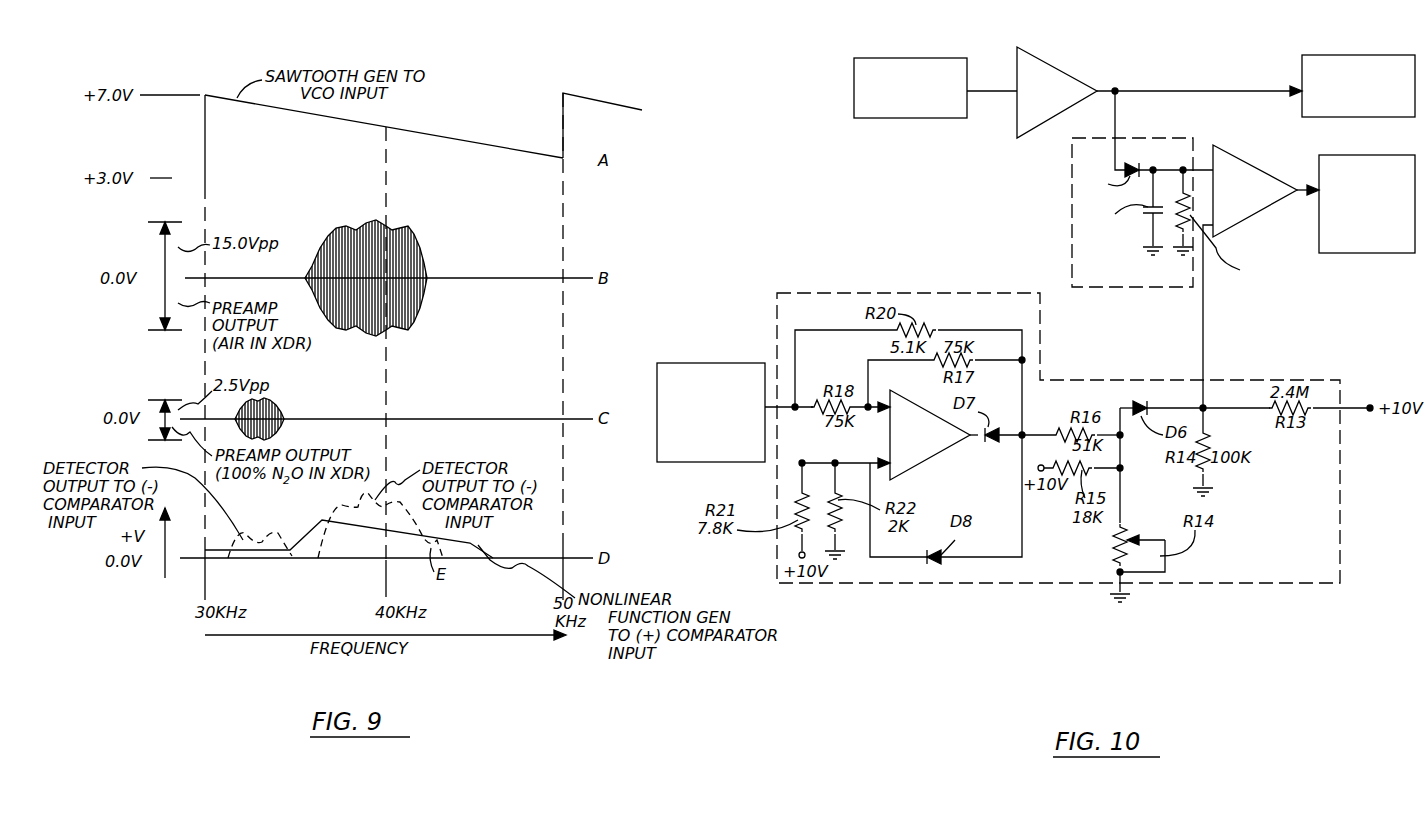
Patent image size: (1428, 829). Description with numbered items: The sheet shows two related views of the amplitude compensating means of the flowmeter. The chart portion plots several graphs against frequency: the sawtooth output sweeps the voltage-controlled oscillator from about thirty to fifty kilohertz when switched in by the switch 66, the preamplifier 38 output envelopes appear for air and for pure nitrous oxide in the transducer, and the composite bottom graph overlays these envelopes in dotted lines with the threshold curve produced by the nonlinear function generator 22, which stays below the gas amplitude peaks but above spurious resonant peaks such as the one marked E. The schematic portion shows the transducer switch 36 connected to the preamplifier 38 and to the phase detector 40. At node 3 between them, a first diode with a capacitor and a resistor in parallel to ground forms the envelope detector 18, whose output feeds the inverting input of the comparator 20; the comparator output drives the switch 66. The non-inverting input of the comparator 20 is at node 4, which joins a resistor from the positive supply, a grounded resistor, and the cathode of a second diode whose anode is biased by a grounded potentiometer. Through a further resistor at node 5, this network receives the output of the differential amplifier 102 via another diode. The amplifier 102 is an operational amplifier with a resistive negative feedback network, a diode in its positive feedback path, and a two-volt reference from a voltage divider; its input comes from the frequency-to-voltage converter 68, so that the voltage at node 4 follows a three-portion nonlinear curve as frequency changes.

The transducer switch 36 is at (920, 57).
The preamplifier 38 is at (1070, 70).
The node 3 is at (1116, 90).
The envelope detector 18 is at (1148, 138).
The phase detector 40 is at (1360, 55).
The comparator 20 is at (1228, 147).
The switch 66 is at (1372, 155).
The frequency-to-voltage converter 68 is at (730, 362).
The differential amplifier 102 is at (928, 410).
The node 5 is at (1026, 430).
The node 4 is at (1206, 405).
The nonlinear function generator 22 is at (1340, 497).